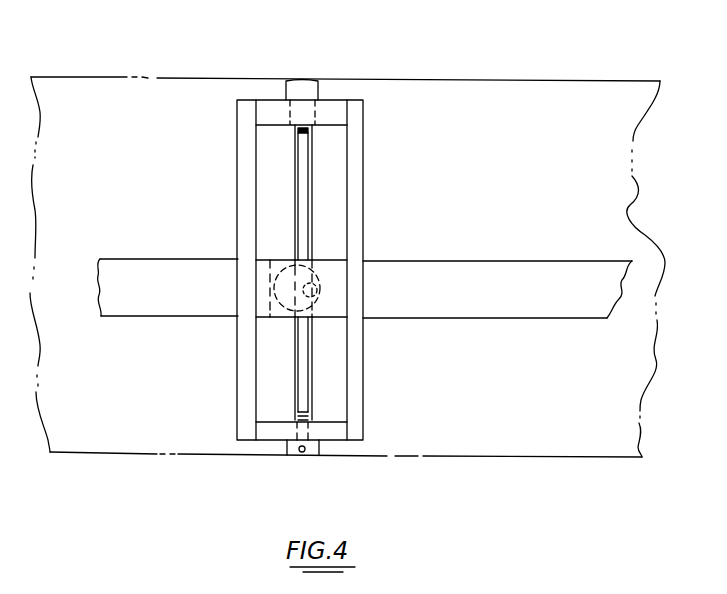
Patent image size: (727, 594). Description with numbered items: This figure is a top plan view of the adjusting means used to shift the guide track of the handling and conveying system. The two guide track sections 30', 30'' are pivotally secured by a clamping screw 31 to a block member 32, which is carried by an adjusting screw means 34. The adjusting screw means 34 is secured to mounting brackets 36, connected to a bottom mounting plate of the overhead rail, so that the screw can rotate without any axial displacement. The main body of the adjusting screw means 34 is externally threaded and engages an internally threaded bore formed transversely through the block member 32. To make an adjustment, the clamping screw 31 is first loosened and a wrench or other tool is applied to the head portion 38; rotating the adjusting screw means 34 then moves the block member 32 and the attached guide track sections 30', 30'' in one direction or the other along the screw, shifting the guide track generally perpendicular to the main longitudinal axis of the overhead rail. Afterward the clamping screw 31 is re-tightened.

The guide track means section 30' is at (497, 317).
The guide track means section 30'' is at (169, 317).
The clamping screw 31 is at (290, 262).
The block member 32 is at (332, 272).
The adjusting screw means 34 is at (302, 155).
The mounting brackets 36 is at (332, 113).
The head portion 38 is at (306, 92).